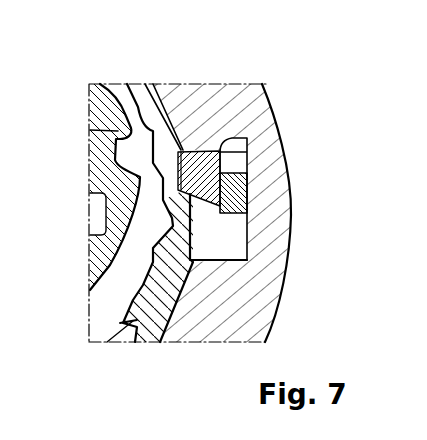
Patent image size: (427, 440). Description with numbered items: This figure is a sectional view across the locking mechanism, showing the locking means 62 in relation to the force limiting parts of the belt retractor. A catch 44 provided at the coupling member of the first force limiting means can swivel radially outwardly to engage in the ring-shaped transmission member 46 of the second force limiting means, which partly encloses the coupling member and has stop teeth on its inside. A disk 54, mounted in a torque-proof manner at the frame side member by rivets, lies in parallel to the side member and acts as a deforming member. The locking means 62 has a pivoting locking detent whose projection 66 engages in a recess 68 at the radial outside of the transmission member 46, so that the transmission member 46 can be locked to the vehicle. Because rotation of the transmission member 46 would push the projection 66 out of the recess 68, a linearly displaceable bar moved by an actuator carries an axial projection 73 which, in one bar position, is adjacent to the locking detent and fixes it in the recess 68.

The catch 44 is at (107, 183).
The transmission member 46 is at (133, 333).
The disk 54 is at (262, 86).
The locking means 62 is at (193, 205).
The projection 66 is at (250, 140).
The recess 68 is at (185, 150).
The axial projection 73 is at (250, 190).